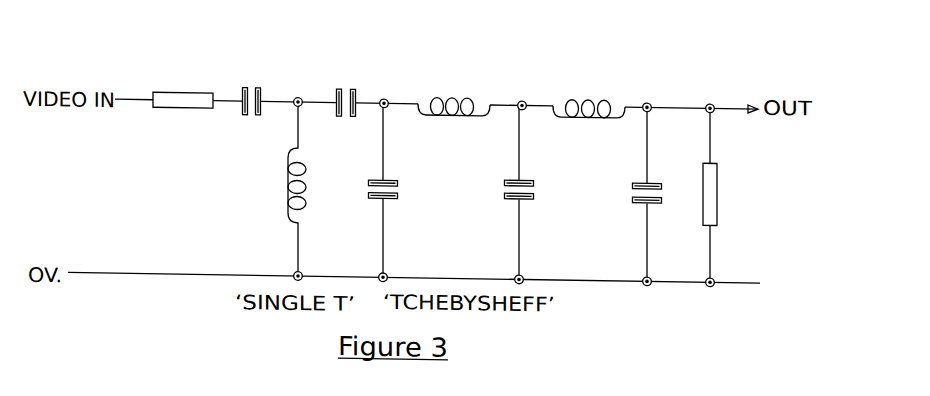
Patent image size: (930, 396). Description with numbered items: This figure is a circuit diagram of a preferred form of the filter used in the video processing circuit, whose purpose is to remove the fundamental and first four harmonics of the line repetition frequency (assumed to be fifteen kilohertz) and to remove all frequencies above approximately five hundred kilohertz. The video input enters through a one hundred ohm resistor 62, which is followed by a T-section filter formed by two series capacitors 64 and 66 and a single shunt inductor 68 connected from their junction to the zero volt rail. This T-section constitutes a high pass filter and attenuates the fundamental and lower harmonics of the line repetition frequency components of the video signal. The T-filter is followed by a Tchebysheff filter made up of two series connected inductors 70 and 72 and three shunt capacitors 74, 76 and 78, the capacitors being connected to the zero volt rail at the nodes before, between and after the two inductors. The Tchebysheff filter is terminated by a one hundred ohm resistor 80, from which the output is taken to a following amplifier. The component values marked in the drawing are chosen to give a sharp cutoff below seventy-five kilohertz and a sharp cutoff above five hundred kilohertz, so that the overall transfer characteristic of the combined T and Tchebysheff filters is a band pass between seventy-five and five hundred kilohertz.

The 100 ohm resistor 62 is at (182, 109).
The capacitor 64 is at (261, 99).
The capacitor 66 is at (355, 96).
The inductor 68 is at (288, 212).
The inductor 70 is at (476, 92).
The inductor 72 is at (607, 93).
The capacitor 74 is at (380, 198).
The capacitor 76 is at (527, 197).
The capacitor 78 is at (640, 198).
The 100 ohm resistor 80 is at (717, 214).